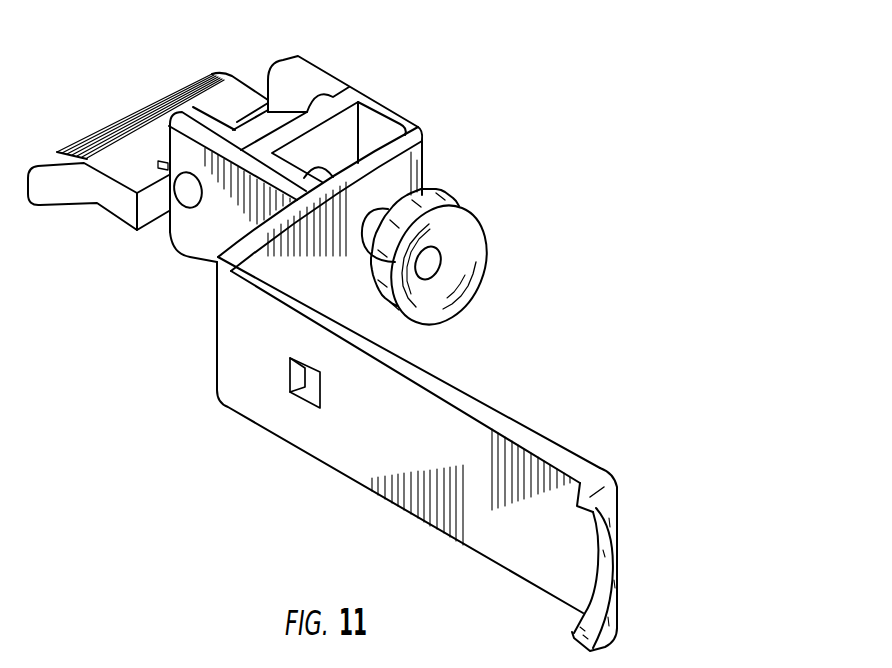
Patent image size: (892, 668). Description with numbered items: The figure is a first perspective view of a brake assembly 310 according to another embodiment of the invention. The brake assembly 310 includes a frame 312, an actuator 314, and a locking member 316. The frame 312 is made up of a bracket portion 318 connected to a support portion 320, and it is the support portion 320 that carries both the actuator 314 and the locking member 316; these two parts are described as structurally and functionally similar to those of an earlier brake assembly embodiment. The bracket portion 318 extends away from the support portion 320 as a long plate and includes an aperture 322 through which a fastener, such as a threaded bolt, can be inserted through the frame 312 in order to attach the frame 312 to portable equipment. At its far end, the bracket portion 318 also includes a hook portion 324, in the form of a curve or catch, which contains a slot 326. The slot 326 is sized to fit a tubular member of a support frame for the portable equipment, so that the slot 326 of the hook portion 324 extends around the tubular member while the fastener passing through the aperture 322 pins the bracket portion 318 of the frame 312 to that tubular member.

The brake assembly 310 is at (548, 191).
The frame 312 is at (234, 318).
The actuator 314 is at (135, 167).
The locking member 316 is at (423, 210).
The bracket portion 318 is at (398, 433).
The support portion 320 is at (413, 120).
The aperture 322 is at (310, 387).
The hook portion 324 is at (611, 497).
The slot 326 is at (607, 593).